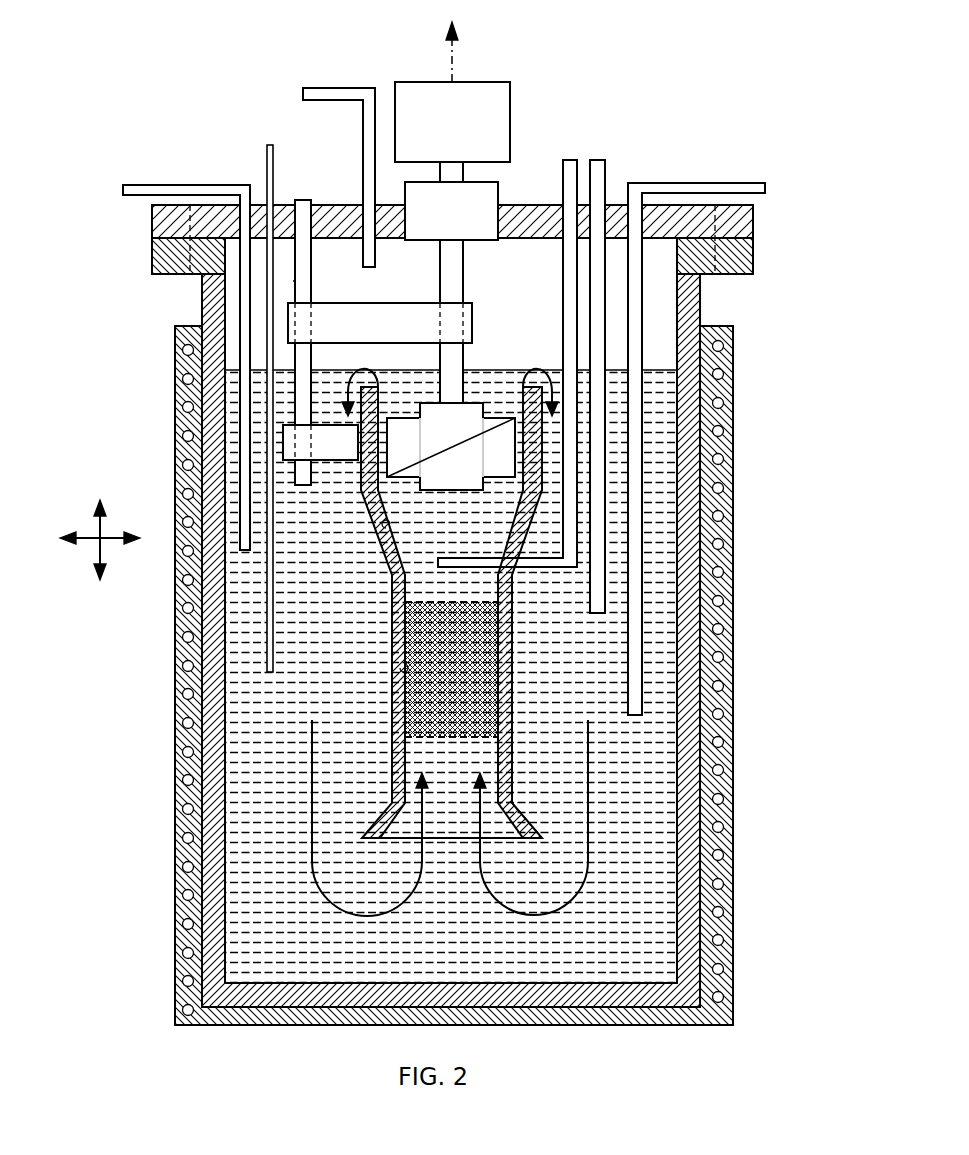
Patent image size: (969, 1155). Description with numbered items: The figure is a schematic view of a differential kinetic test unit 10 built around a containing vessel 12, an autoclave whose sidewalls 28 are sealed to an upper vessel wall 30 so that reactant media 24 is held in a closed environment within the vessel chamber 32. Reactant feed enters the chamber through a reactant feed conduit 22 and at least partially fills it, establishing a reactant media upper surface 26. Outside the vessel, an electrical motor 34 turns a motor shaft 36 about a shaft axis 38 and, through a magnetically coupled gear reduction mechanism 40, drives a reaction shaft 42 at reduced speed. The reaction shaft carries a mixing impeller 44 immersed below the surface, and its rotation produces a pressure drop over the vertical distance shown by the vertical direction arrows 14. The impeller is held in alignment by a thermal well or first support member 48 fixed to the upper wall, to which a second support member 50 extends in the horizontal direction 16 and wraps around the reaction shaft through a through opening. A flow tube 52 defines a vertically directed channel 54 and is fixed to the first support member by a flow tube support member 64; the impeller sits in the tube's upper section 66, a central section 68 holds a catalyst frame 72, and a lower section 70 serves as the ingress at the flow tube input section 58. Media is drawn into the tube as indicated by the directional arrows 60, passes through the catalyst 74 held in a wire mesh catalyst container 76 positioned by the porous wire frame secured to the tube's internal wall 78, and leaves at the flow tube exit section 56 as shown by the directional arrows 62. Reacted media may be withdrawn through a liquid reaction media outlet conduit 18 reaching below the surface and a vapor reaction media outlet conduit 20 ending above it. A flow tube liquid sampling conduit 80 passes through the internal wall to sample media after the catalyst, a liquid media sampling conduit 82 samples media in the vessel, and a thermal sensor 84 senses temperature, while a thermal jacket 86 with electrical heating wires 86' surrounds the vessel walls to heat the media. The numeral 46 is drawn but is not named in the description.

The differential kinetic test unit 10 is at (115, 310).
The containing vessel 12 is at (767, 218).
The vertical direction 14 is at (95, 525).
The horizontal direction 16 is at (110, 545).
The liquid reaction media outlet conduit 18 is at (167, 185).
The vapor reaction media outlet conduit 20 is at (335, 88).
The reactant feed conduit 22 is at (648, 183).
The reactant media 24 is at (395, 935).
The reactant media upper surface 26 is at (661, 370).
The vessel sidewalls 28 is at (178, 822).
The upper vessel wall 30 is at (152, 218).
The vessel chamber 32 is at (665, 795).
The electrical motor 34 is at (467, 135).
The motor shaft 36 is at (463, 172).
The shaft axis 38 is at (452, 48).
The gear reduction mechanism 40 is at (467, 224).
The reaction shaft 42 is at (463, 262).
The mixing impeller 44 is at (500, 468).
The support tube 46 is at (330, 302).
The first support member 48 is at (293, 281).
The second support member 50 is at (375, 302).
The flow tube 52 is at (512, 640).
The flow tube vertically directed channel 54 is at (500, 588).
The flow tube exit section 56 is at (442, 567).
The flow tube input section 58 is at (455, 840).
The directional arrows 60 is at (325, 915).
The directional arrows 62 is at (353, 377).
The flow tube support member 64 is at (283, 440).
The upper section 66 is at (360, 480).
The central section 68 is at (512, 715).
The lower section 70 is at (525, 815).
The catalyst frame 72 is at (420, 600).
The catalyst 74 is at (451, 669).
The catalyst container 76 is at (400, 668).
The internal wall 78 is at (388, 528).
The flow tube liquid sampling conduit 80 is at (570, 160).
The liquid media sampling conduit 82 is at (598, 160).
The thermal sensor 84 is at (273, 160).
The thermal jacket 86 is at (767, 672).
The electrical heating wires 86' is at (491, 680).